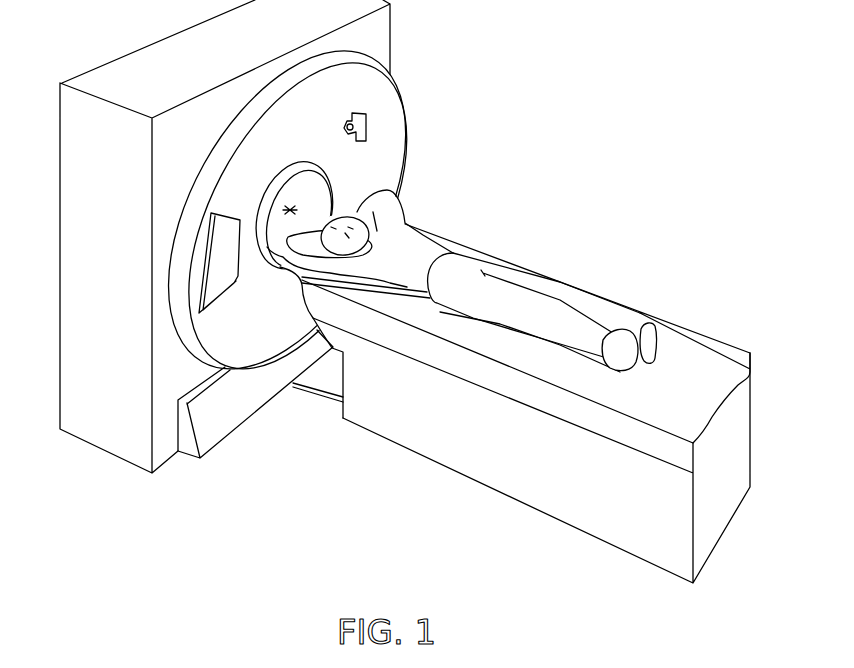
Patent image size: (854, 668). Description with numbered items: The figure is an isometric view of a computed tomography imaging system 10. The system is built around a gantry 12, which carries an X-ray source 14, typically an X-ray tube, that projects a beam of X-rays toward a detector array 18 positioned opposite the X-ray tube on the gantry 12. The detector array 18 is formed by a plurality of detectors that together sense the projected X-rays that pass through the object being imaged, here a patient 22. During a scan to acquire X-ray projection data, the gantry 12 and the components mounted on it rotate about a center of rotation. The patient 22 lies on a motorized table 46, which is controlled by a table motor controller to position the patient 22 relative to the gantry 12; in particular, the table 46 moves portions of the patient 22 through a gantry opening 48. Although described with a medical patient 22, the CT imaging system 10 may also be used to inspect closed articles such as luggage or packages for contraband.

The CT imaging system 10 is at (584, 116).
The gantry 12 is at (339, 108).
The X-ray source 14 is at (370, 121).
The detector array 18 is at (233, 284).
The patient 22 is at (508, 273).
The motorized table 46 is at (497, 473).
The gantry opening 48 is at (293, 211).